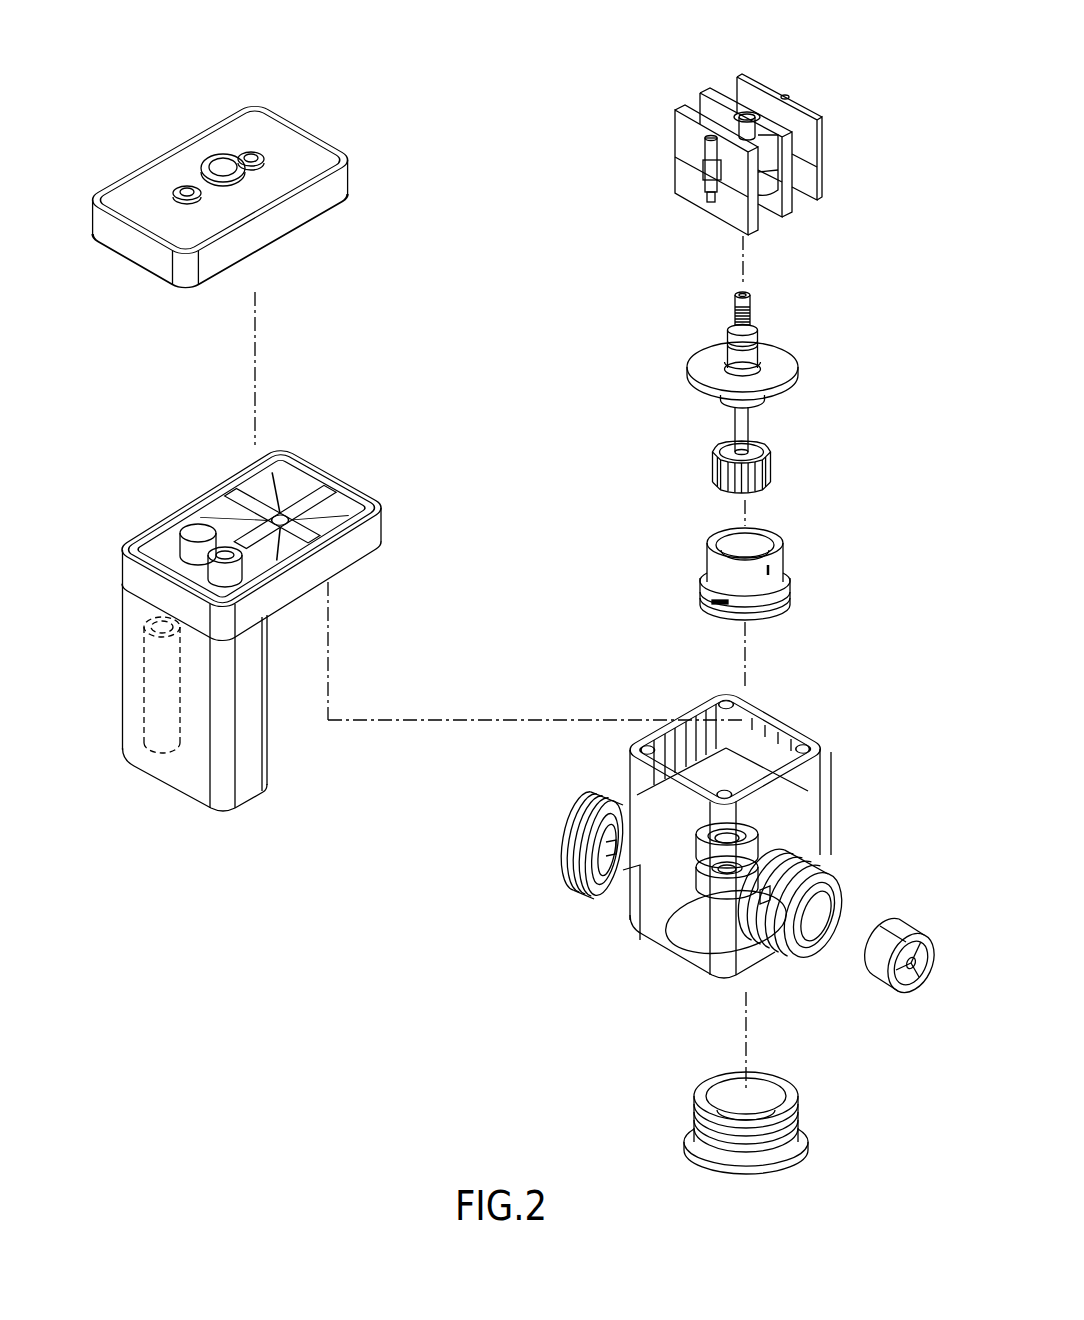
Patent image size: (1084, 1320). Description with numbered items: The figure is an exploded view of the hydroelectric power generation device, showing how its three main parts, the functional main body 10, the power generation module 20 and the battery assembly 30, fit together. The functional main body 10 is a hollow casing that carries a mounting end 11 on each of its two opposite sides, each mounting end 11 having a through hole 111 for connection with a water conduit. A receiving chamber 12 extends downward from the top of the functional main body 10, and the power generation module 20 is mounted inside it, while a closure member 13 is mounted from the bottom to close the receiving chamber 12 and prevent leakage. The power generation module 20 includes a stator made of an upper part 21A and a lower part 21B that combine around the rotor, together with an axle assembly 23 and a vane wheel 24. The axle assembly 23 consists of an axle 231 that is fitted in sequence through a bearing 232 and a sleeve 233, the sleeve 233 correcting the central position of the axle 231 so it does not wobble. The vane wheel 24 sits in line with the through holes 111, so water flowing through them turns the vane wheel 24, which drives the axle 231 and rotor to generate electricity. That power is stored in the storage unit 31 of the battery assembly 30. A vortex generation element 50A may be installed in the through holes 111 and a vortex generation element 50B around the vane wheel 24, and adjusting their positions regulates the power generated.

The functional main body 10 is at (583, 890).
The mounting end 11 is at (580, 820).
The through hole 111 is at (845, 897).
The receiving chamber 12 is at (773, 715).
The closure member 13 is at (693, 1128).
The power generation module 20 is at (860, 100).
The upper part 21A is at (675, 120).
The lower part 21B is at (705, 175).
The axle assembly 23 is at (890, 275).
The axle 231 is at (750, 302).
The bearing 232 is at (750, 337).
The sleeve 233 is at (782, 365).
The vane wheel 24 is at (768, 453).
The battery assembly 30 is at (335, 200).
The storage unit 31 is at (152, 704).
The vortex generation element 50A is at (777, 568).
The vortex generation element 50B is at (875, 982).